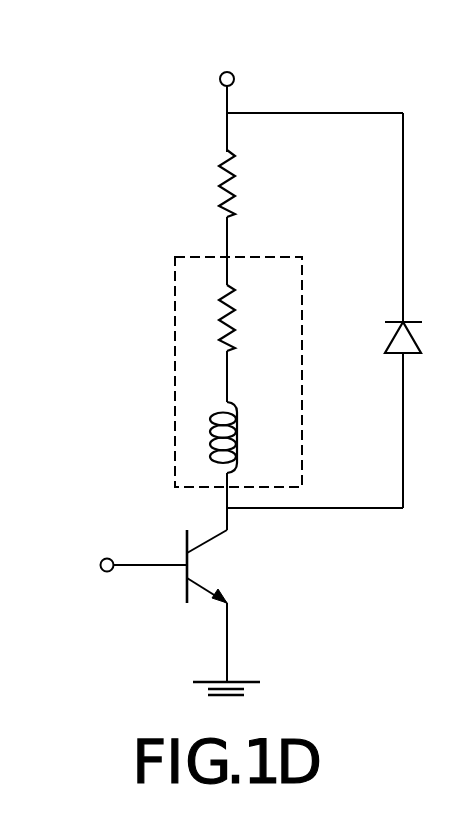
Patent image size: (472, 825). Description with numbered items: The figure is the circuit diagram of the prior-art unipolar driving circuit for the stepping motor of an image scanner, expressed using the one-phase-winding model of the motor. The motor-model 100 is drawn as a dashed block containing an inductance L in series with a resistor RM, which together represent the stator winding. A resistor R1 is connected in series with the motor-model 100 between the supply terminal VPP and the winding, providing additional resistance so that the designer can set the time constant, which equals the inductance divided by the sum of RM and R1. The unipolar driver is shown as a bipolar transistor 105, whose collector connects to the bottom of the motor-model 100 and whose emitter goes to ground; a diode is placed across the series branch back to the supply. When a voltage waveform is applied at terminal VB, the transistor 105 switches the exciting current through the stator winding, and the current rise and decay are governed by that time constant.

The motor-model 100 is at (280, 393).
The bipolar transistor 105 is at (222, 595).
The resistor RM is at (251, 318).
The inductance L is at (236, 437).
The resistor R' R1 is at (271, 167).
The terminal VPP is at (233, 89).
The terminal VB is at (119, 563).